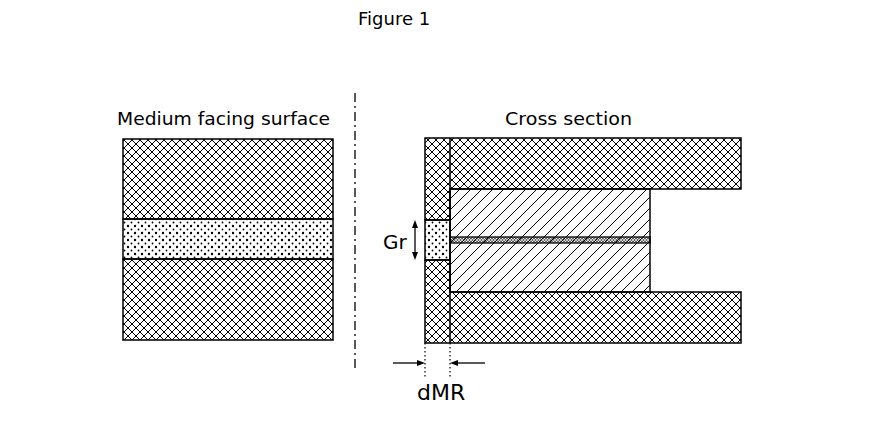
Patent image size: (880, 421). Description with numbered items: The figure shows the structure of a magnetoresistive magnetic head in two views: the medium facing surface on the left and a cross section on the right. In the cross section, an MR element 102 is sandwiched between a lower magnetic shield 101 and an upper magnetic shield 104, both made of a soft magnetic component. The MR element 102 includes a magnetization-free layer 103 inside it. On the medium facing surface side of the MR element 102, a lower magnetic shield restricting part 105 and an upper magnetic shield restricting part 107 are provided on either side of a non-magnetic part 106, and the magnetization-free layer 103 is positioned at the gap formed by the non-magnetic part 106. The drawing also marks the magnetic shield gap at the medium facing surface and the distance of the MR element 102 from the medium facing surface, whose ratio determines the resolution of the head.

The lower magnetic shield 101 is at (741, 318).
The MR element 102 is at (652, 191).
The magnetization-free layer 103 is at (651, 238).
The upper magnetic shield 104 is at (741, 160).
The lower magnetic shield restricting part 105 is at (123, 305).
The non-magnetic part 106 is at (123, 243).
The upper magnetic shield restricting part 107 is at (123, 181).